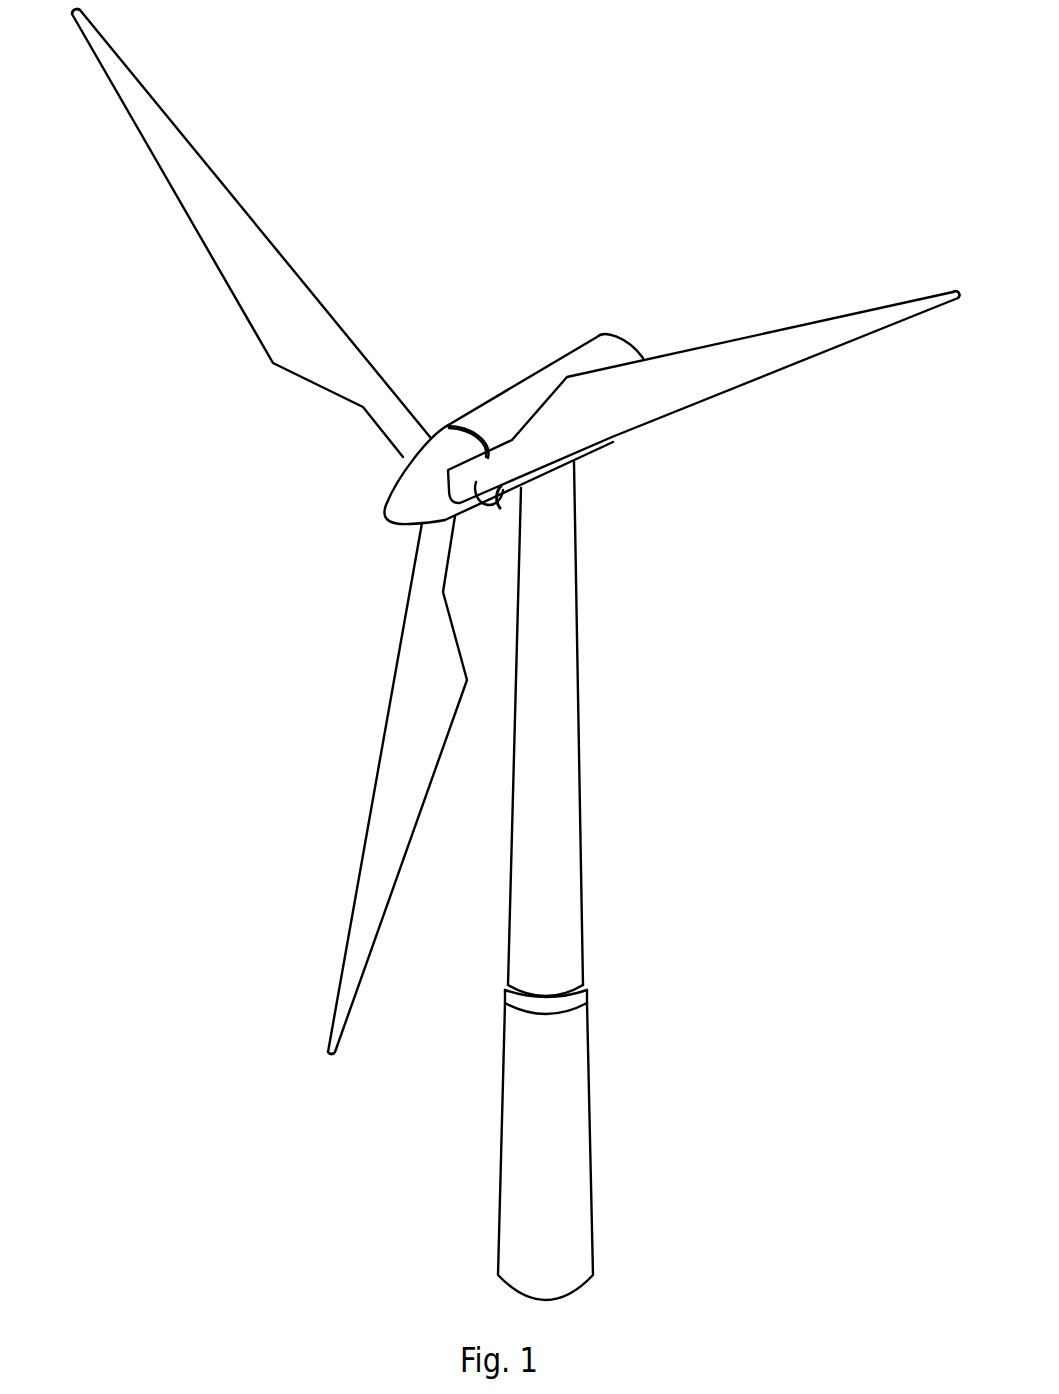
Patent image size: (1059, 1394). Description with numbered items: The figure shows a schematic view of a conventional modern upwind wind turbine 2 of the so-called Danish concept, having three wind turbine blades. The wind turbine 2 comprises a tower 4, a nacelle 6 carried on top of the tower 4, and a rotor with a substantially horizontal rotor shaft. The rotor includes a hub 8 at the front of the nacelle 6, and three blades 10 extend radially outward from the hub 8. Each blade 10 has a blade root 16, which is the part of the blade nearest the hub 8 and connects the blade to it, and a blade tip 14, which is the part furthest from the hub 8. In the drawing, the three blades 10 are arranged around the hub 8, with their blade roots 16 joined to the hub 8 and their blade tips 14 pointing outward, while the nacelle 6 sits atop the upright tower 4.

The wind turbine 2 is at (515, 654).
The tower 4 is at (565, 728).
The nacelle 6 is at (508, 403).
The hub 8 is at (407, 495).
The blade 10 is at (287, 333).
The blade tip 14 is at (115, 70).
The blade root 16 is at (417, 446).